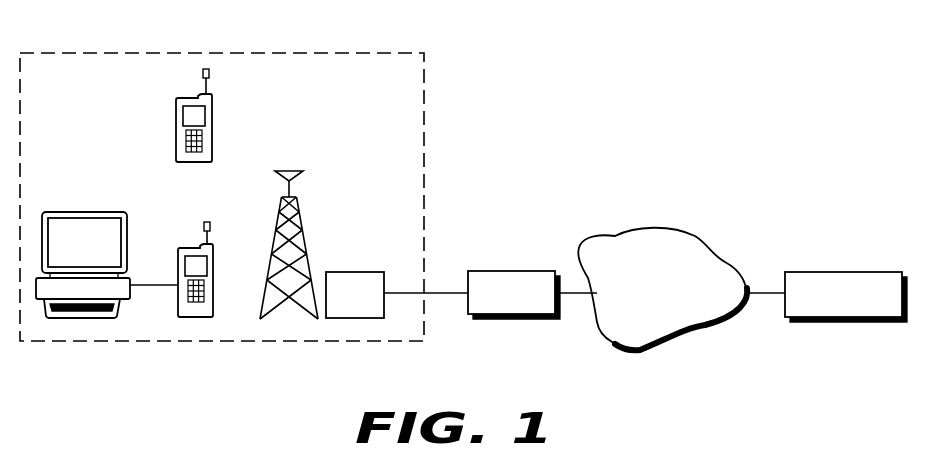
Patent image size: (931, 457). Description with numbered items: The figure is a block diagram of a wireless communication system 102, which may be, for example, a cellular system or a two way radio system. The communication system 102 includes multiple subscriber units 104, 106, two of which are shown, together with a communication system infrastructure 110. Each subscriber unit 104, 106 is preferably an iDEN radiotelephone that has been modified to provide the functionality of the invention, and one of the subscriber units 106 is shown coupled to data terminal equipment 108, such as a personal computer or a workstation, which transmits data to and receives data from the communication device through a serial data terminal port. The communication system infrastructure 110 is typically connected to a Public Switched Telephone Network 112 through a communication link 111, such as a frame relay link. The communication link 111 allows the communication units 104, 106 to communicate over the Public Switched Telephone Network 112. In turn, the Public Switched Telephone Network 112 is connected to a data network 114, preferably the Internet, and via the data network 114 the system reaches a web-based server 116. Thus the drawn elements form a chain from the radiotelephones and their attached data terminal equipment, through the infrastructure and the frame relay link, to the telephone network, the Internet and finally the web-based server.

The wireless communication system 102 is at (94, 52).
The subscriber unit 104 is at (185, 98).
The subscriber unit 106 is at (188, 248).
The data terminal equipment 108 is at (85, 212).
The communication system infrastructure 110 is at (350, 272).
The communication link 111 is at (443, 293).
The Public Switched Telephone Network 112 is at (498, 271).
The data network 114 is at (617, 234).
The web-based server 116 is at (812, 272).